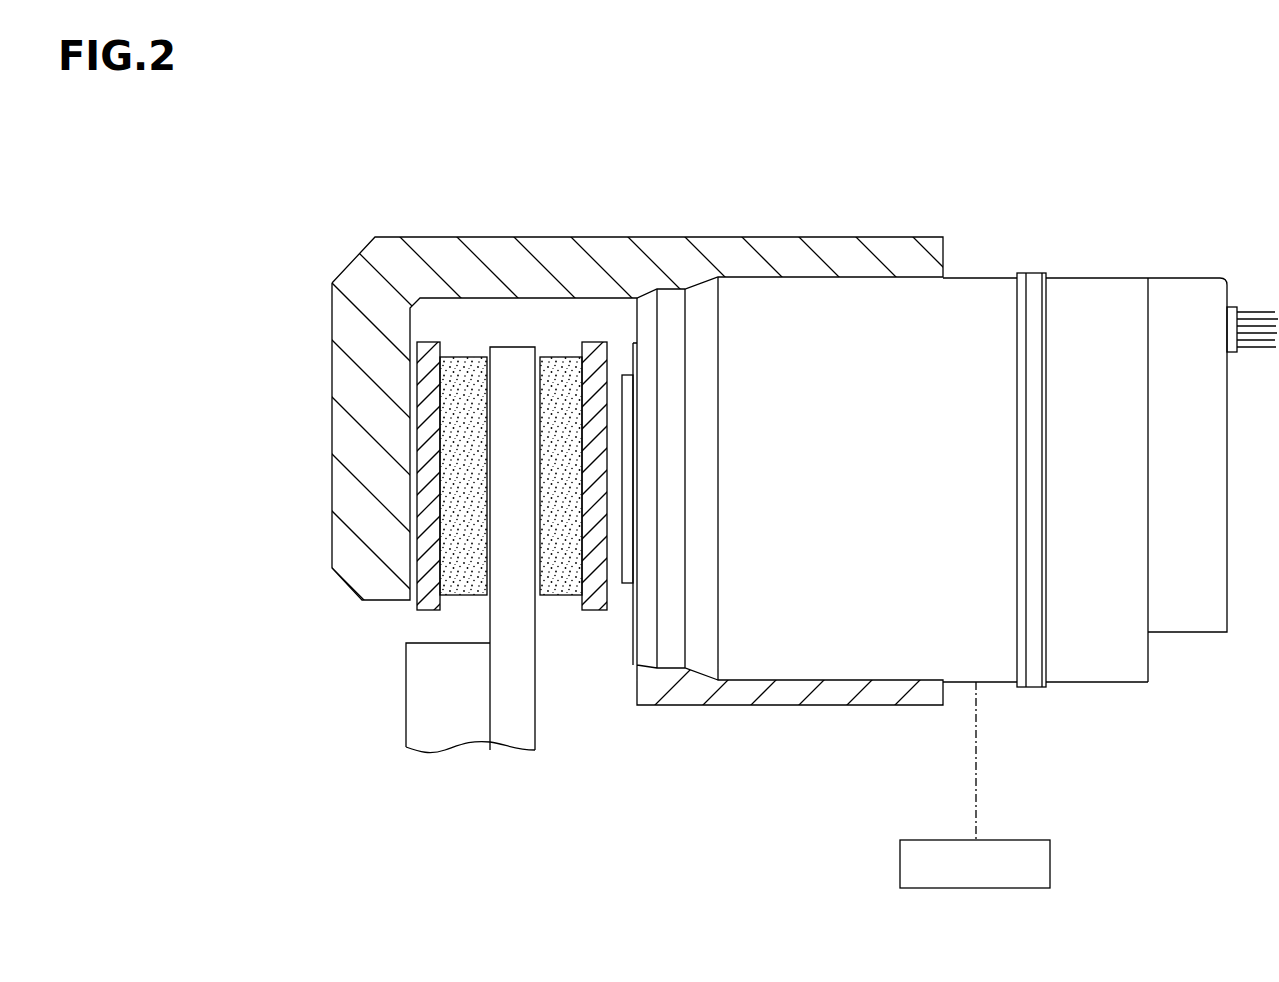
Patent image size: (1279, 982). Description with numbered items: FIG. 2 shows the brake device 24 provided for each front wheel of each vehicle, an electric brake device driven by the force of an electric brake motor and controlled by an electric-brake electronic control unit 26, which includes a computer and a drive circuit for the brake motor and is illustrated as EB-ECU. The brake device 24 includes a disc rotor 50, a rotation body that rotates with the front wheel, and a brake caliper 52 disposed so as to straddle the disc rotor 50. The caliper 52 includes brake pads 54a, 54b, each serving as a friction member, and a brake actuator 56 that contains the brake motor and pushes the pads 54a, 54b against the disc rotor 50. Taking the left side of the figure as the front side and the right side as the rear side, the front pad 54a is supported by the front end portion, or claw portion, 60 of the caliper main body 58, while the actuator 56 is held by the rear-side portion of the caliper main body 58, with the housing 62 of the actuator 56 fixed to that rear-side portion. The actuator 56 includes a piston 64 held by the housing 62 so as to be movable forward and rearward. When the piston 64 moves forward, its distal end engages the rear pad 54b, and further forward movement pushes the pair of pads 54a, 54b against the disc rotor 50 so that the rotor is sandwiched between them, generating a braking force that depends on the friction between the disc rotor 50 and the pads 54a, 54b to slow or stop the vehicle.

The brake device 24 is at (287, 147).
The electric-brake electronic control unit 26 is at (1038, 843).
The disc rotor 50 is at (513, 730).
The brake caliper 52 is at (820, 205).
The brake pad 54a is at (456, 598).
The brake pad 54b is at (570, 596).
The brake actuator 56 is at (1085, 255).
The caliper main body 58 is at (608, 252).
The front end portion (claw portion) 60 is at (353, 512).
The housing 62 is at (1082, 665).
The piston 64 is at (630, 582).